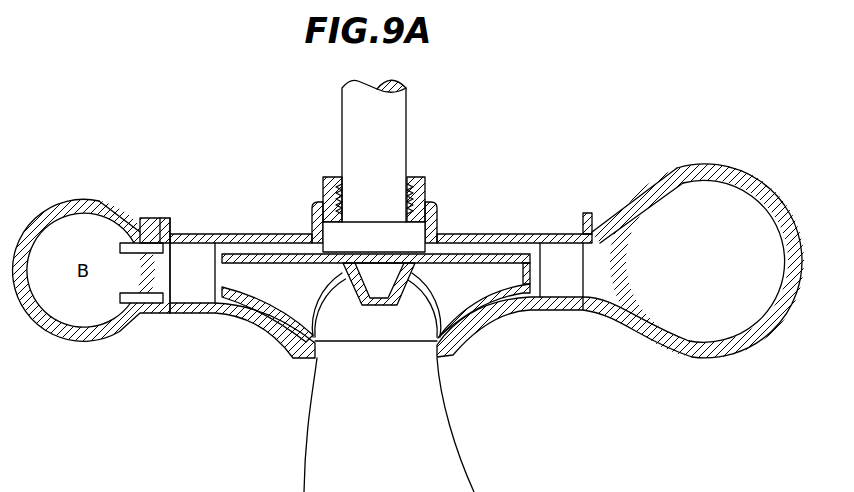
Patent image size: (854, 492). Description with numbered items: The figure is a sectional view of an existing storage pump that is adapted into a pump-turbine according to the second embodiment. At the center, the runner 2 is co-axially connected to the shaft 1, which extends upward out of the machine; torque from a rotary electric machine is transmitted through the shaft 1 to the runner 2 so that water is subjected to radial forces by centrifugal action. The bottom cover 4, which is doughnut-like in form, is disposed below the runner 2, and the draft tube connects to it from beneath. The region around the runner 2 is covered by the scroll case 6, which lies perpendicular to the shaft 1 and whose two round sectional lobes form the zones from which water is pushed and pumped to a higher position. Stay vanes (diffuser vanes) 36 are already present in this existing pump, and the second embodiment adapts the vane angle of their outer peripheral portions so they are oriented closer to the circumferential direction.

The shaft 1 is at (397, 110).
The runner 2 is at (275, 260).
The stay vanes (diffuser vanes) 36 is at (555, 243).
The bottom cover 4 is at (493, 320).
The scroll case 6 is at (677, 172).